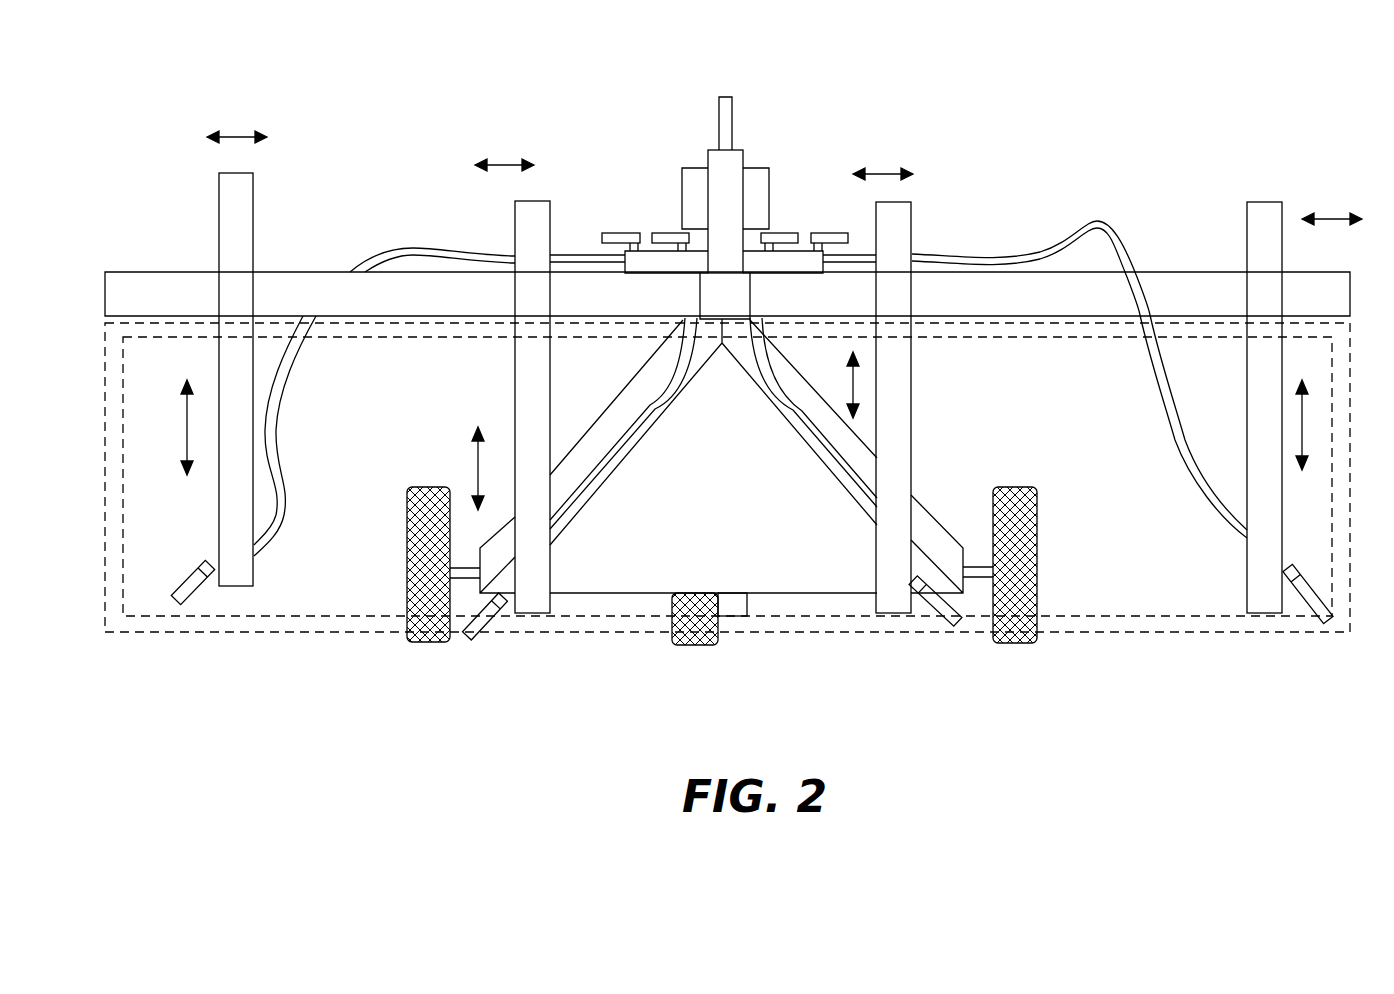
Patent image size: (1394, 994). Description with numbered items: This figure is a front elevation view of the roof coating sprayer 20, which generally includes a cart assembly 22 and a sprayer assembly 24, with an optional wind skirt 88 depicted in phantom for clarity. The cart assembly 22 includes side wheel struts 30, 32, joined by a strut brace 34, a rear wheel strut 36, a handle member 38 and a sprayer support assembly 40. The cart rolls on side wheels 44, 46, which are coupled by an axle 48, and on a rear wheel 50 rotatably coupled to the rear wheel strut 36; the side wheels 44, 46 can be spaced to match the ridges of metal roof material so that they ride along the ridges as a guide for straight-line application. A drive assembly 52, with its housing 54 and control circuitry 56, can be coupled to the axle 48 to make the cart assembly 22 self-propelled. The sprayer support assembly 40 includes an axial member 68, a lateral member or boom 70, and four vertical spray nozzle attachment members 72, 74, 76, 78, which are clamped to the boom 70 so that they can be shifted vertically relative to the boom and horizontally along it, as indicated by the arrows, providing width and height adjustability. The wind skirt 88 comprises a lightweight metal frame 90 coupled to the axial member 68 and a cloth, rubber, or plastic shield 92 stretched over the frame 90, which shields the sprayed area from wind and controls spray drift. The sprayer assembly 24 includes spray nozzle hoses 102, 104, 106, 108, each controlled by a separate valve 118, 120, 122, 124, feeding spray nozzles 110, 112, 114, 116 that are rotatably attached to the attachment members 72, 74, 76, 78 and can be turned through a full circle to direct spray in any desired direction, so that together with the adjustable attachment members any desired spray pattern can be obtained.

The roof coating sprayer 20 is at (400, 92).
The cart assembly 22 is at (190, 283).
The sprayer assembly 24 is at (800, 258).
The side wheel strut 30 is at (602, 442).
The side wheel strut 32 is at (817, 457).
The strut brace 34 is at (663, 492).
The rear wheel strut 36 is at (740, 608).
The handle member 38 is at (715, 160).
The sprayer support assembly 40 is at (1185, 282).
The side wheel 44 is at (1017, 643).
The side wheel 46 is at (407, 600).
The axle 48 is at (977, 580).
The rear wheel 50 is at (713, 643).
The drive assembly 52 is at (567, 578).
The housing 54 is at (787, 578).
The control circuitry 56 is at (757, 178).
The axial member 68 is at (720, 307).
The lateral member 70 is at (1220, 268).
The vertical spray nozzle attachment member 72 is at (1267, 210).
The vertical spray nozzle attachment member 74 is at (898, 225).
The vertical spray nozzle attachment member 76 is at (527, 222).
The vertical spray nozzle attachment member 78 is at (232, 198).
The wind skirt 88 is at (1212, 633).
The frame 90 is at (1137, 633).
The shield 92 is at (1125, 505).
The spray nozzle hose 102 is at (1083, 230).
The spray nozzle hose 104 is at (852, 462).
The spray nozzle hose 106 is at (613, 465).
The spray nozzle hose 108 is at (270, 548).
The spray nozzle 110 is at (1322, 627).
The spray nozzle 112 is at (943, 615).
The spray nozzle 114 is at (470, 633).
The spray nozzle 116 is at (178, 600).
The valve 118 is at (837, 232).
The valve 120 is at (780, 232).
The valve 122 is at (662, 232).
The valve 124 is at (622, 232).